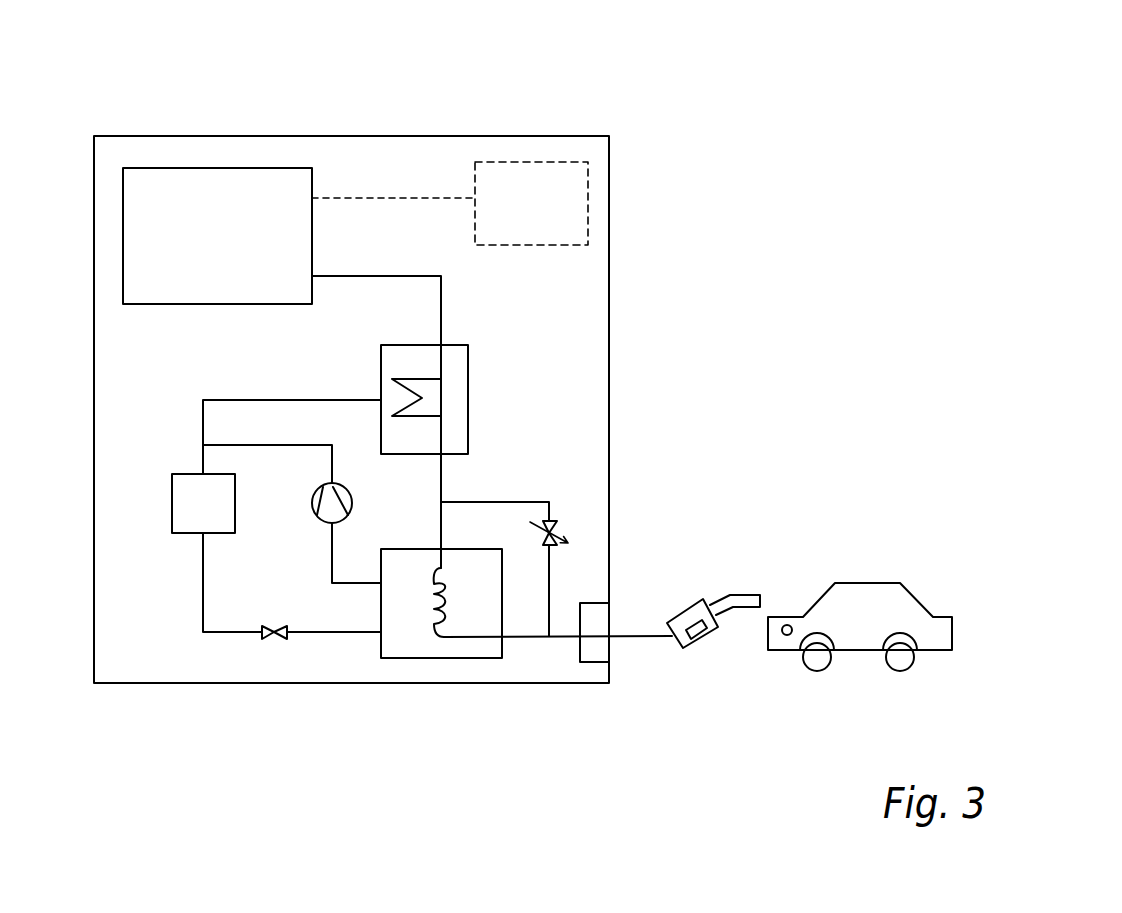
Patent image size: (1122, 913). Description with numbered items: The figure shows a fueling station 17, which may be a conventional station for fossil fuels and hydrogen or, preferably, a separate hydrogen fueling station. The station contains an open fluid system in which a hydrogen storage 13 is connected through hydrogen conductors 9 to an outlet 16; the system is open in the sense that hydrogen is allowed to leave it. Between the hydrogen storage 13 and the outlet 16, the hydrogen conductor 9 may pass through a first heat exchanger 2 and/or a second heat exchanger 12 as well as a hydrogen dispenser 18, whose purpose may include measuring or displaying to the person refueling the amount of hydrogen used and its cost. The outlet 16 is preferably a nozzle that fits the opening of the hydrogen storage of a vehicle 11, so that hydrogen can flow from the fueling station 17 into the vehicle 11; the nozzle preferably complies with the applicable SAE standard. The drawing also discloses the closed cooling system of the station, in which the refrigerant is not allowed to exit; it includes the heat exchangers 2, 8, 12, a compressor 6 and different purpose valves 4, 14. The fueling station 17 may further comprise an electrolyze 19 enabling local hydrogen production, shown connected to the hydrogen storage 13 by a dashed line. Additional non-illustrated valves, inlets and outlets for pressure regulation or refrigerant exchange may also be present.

The first heat exchanger 2 is at (452, 658).
The valve 4 is at (270, 632).
The compressor 6 is at (322, 523).
The heat exchanger 8 is at (173, 473).
The hydrogen conductor 9 is at (430, 276).
The vehicle 11 is at (865, 582).
The second heat exchanger 12 is at (468, 372).
The hydrogen storage 13 is at (268, 168).
The valve 14 is at (555, 523).
The outlet 16 is at (700, 642).
The fueling station 17 is at (533, 136).
The hydrogen dispenser 18 is at (595, 662).
The electrolyze 19 is at (588, 218).